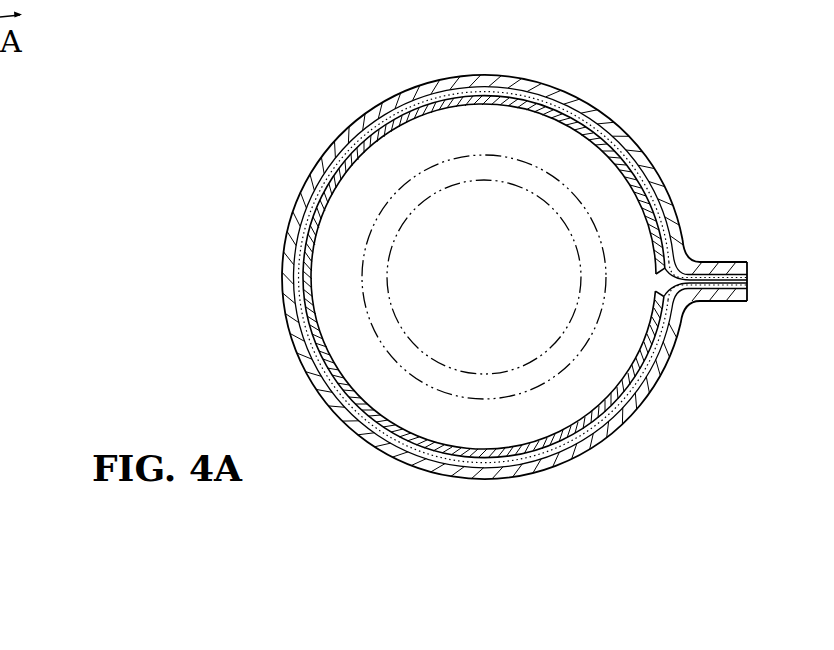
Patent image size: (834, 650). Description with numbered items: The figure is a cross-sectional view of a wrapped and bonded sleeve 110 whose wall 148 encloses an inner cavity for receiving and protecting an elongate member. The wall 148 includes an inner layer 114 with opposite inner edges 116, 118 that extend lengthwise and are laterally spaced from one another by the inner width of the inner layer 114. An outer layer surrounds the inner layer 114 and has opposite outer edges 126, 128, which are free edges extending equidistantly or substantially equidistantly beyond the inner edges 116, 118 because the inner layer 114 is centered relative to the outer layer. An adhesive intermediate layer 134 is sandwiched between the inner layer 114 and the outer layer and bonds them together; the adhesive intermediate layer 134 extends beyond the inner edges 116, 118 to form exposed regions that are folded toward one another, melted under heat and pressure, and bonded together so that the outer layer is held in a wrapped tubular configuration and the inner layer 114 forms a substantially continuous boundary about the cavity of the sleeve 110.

The wrapped and bonded sleeve 110 is at (668, 107).
The inner layer 114 is at (394, 126).
The inner edge 116 is at (661, 268).
The inner edge 118 is at (660, 290).
The outer edge 126 is at (749, 270).
The outer edge 128 is at (749, 293).
The adhesive intermediate layer 134 is at (718, 286).
The wall 148 is at (288, 275).